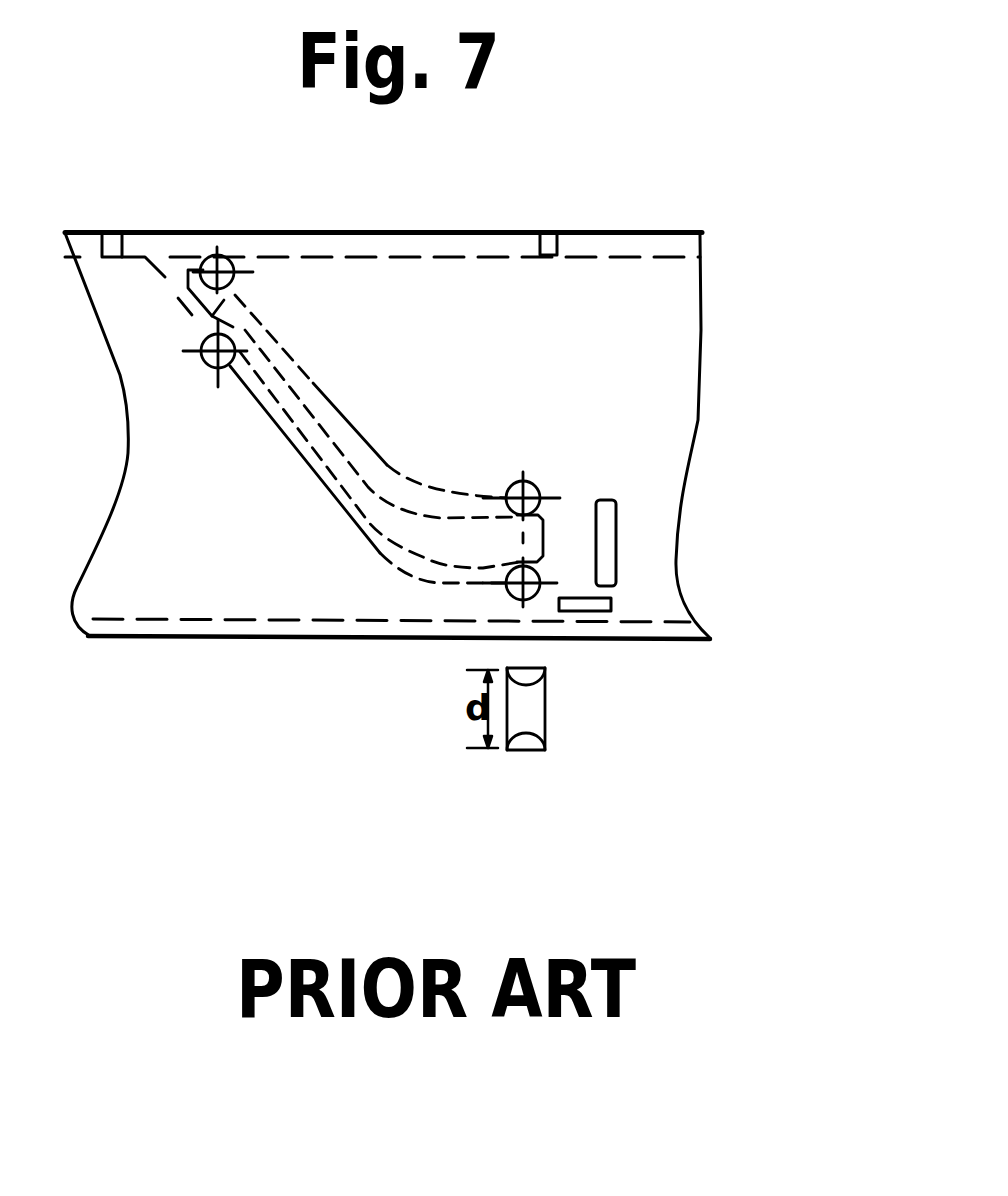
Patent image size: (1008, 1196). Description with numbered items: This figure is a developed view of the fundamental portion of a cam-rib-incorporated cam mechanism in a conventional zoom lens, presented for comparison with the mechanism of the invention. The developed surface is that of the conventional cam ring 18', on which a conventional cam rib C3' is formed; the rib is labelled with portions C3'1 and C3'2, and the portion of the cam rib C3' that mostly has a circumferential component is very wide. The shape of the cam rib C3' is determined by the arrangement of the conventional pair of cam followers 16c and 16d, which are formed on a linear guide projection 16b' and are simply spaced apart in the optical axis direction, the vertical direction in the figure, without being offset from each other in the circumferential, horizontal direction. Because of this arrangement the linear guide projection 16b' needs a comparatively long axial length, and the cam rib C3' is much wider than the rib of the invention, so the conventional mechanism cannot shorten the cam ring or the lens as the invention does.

The cam plate 18' is at (488, 436).
The cam rib C3' is at (360, 447).
The first cam slot portion C3'1 is at (376, 383).
The second cam slot portion C3'2 is at (362, 463).
The linear guide projection 16b' is at (599, 709).
The cam follower 16c is at (530, 677).
The cam follower 16d is at (512, 750).